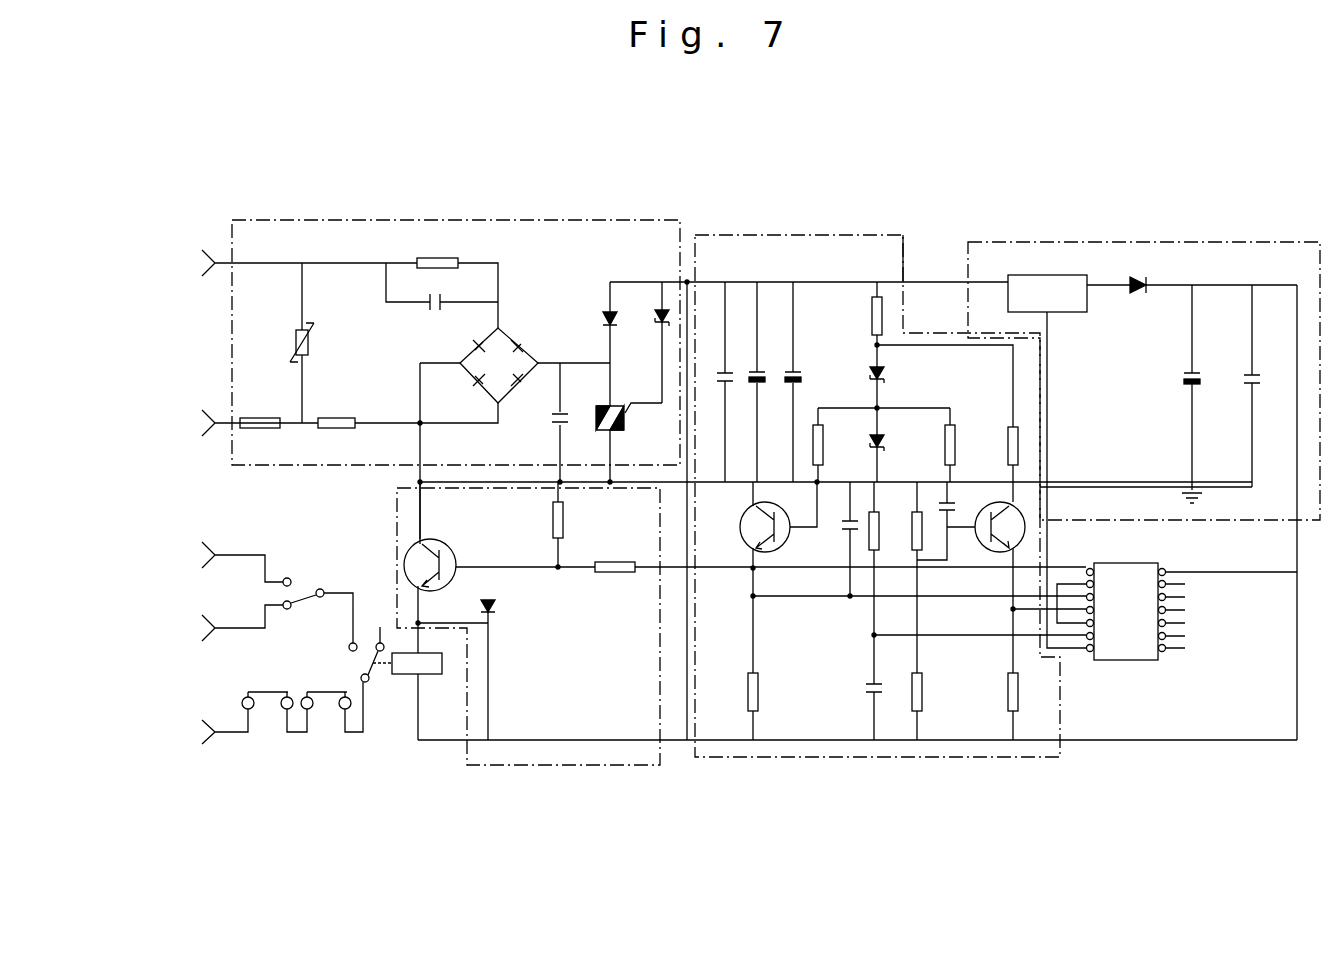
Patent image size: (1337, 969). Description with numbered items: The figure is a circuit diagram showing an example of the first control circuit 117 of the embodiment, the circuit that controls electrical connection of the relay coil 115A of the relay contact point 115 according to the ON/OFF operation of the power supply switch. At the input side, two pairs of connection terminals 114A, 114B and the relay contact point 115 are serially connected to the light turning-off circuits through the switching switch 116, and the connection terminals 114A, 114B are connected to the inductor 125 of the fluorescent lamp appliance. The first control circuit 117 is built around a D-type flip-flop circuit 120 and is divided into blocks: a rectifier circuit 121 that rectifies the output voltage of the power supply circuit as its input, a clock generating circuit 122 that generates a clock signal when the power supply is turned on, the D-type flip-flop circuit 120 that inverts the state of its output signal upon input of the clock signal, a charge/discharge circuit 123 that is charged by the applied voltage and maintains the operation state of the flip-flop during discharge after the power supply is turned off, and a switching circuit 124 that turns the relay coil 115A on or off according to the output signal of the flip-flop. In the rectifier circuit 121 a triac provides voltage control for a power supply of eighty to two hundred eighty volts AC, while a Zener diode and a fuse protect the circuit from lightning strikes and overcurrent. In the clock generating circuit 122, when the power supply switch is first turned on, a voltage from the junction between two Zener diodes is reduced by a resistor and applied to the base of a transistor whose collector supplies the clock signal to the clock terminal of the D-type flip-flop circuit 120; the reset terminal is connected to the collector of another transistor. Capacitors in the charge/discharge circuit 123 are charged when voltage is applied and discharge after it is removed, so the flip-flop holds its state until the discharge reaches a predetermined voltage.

The connection terminal 114A is at (287, 710).
The connection terminal 114B is at (312, 713).
The relay contact point 115 is at (368, 666).
The relay coil 115A is at (398, 676).
The switching switch 116 is at (315, 595).
The first control circuit 117 is at (655, 193).
The D-type flip-flop circuit 120 is at (1153, 663).
The rectifier circuit 121 is at (430, 220).
The clock generating circuit 122 is at (805, 233).
The charge/discharge circuit 123 is at (1150, 242).
The switching circuit 124 is at (577, 765).
The inductor 125 is at (343, 690).